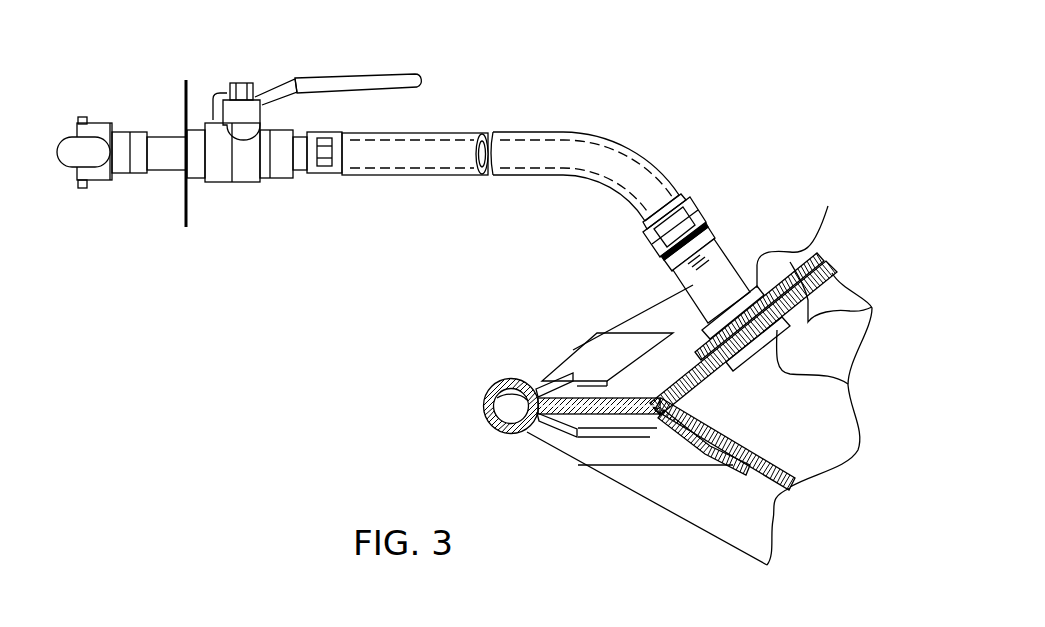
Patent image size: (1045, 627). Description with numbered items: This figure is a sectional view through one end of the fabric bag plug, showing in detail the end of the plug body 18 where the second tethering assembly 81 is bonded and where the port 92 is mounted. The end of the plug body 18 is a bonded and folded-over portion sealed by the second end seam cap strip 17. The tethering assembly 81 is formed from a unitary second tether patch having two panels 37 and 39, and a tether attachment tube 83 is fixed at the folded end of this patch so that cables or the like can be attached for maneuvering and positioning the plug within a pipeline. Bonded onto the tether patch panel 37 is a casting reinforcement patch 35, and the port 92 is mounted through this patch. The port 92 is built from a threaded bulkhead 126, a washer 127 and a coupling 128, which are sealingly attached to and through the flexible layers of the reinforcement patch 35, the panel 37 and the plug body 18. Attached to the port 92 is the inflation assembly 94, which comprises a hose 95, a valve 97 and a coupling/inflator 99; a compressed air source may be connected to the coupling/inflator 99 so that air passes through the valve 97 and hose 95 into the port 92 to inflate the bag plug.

The second end seam cap strip 17 is at (593, 355).
The plug body 18 is at (880, 298).
The casting reinforcement patch 35 is at (826, 263).
The tether patch panel 37 is at (678, 352).
The tether patch panel 39 is at (577, 416).
The second tethering assembly 81 is at (612, 303).
The tether attachment tube 83 is at (490, 415).
The port 92 is at (723, 282).
The inflation assembly 94 is at (413, 115).
The hose 95 is at (575, 133).
The valve 97 is at (238, 118).
The coupling/inflator 99 is at (87, 150).
The threaded bulkhead 126 is at (848, 384).
The washer 127 is at (730, 262).
The coupling 128 is at (727, 282).